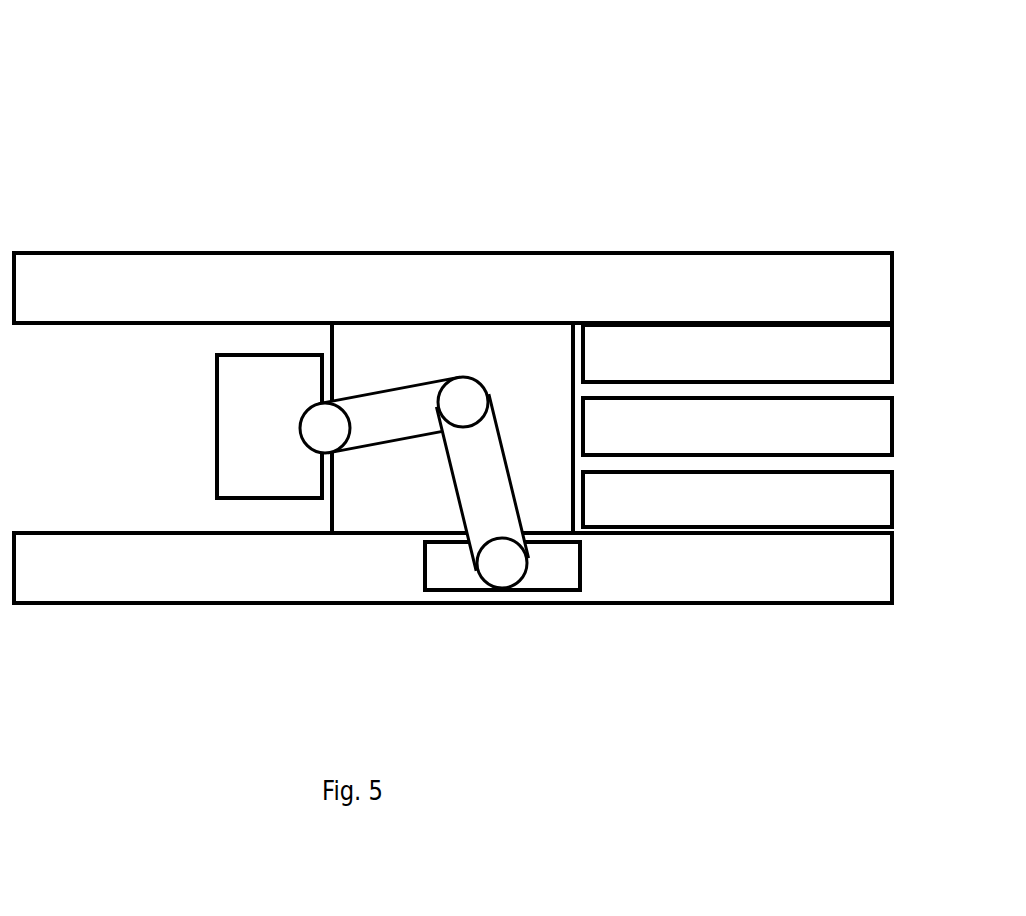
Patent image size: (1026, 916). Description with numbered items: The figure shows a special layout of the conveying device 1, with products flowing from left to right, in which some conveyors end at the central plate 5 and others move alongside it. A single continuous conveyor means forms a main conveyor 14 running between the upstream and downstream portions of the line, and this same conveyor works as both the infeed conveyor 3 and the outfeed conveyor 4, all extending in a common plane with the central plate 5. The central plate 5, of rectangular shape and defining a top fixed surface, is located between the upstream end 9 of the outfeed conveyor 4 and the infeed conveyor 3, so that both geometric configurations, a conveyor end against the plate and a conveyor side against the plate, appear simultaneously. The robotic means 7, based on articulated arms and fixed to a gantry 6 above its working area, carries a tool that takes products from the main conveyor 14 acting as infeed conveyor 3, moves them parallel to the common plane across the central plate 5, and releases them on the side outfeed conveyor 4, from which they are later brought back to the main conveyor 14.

The conveying device 1 is at (215, 118).
The main conveyor 14 is at (263, 290).
The infeed conveyor 3 is at (133, 568).
The outfeed conveyor 4 is at (813, 356).
The upstream end 9 is at (627, 364).
The gantry 6 is at (265, 450).
The central plate 5 is at (440, 336).
The robotic means 7 is at (403, 410).